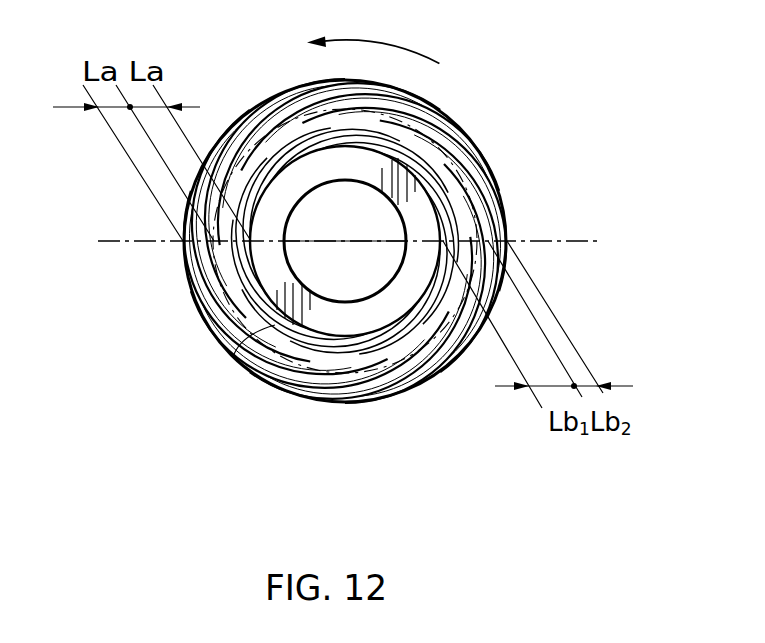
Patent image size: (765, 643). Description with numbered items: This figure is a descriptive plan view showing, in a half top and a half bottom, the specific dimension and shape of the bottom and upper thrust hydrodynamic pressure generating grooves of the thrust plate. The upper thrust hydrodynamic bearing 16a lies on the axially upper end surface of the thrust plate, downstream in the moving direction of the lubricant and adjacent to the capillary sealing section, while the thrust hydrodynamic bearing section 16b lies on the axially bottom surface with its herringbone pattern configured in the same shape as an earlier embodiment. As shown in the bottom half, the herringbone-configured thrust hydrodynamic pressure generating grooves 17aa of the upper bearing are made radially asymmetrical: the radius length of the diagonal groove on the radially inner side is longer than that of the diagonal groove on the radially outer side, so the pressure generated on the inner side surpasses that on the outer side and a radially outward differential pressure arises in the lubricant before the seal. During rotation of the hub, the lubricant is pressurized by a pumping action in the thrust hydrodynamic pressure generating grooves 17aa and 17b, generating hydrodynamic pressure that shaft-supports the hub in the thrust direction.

The upper thrust hydrodynamic bearing 16a is at (397, 398).
The thrust hydrodynamic bearing section 16b is at (490, 151).
The thrust hydrodynamic pressure generating grooves 17aa is at (317, 383).
The thrust hydrodynamic pressure generating grooves 17b is at (433, 130).